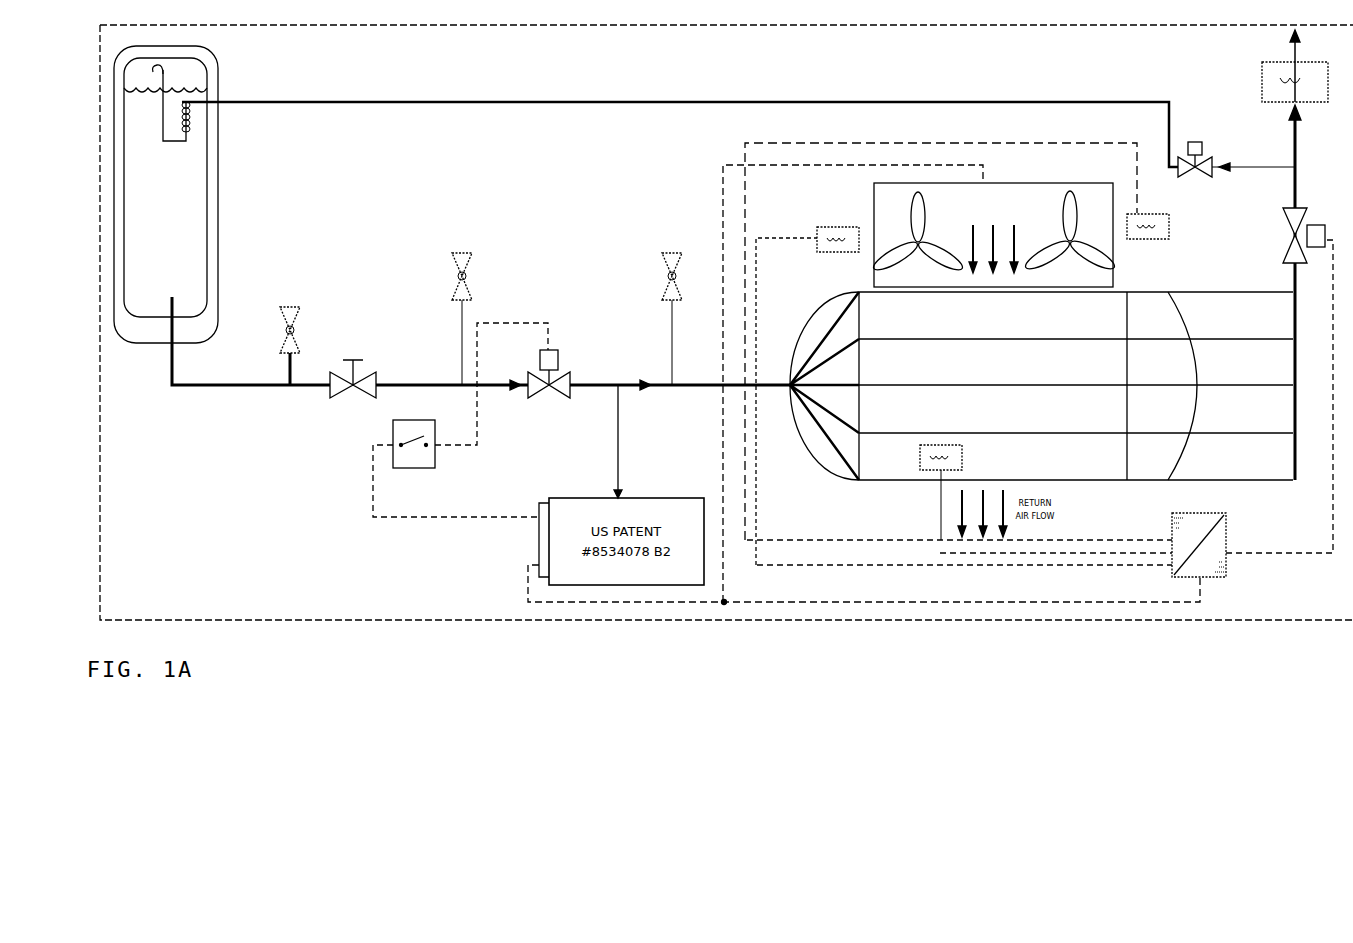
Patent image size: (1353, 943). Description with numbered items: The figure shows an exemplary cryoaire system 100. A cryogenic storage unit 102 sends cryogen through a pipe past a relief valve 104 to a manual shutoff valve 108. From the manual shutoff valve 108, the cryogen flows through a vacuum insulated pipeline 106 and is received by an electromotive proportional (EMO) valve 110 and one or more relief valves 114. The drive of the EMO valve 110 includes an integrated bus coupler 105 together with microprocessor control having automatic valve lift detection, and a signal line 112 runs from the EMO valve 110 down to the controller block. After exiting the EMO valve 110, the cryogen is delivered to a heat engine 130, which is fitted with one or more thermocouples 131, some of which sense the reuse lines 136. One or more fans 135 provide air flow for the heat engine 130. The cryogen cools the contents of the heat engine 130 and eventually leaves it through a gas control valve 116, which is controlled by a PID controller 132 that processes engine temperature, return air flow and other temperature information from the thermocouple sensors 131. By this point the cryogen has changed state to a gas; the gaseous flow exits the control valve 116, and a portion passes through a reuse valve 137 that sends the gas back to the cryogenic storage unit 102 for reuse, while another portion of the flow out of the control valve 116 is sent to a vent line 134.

The cryoaire system 100 is at (726, 322).
The cryogenic storage unit 102 is at (166, 194).
The relief valve 104 is at (272, 346).
The integrated bus coupler 105 is at (460, 420).
The vacuum insulated pipeline 106 is at (675, 246).
The manual shutoff valve 108 is at (353, 385).
The electromotive proportional (EMO) valve 110 is at (549, 380).
The signal line to controller 112 is at (598, 441).
The relief valve 114 is at (550, 319).
The gas control valve 116 is at (1292, 235).
The heat engine 130 is at (1041, 386).
The thermocouple 131 is at (1072, 285).
The PID controller 132 is at (1199, 537).
The vent line 134 is at (1304, 292).
The fans 135 is at (993, 233).
The reuse lines 136 is at (993, 218).
The reuse valve 137 is at (1236, 174).